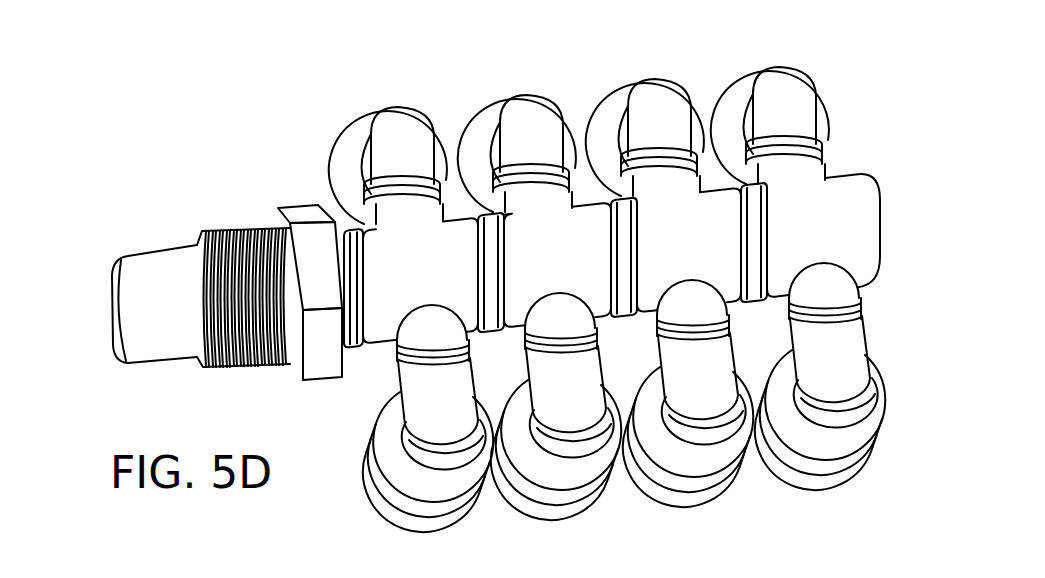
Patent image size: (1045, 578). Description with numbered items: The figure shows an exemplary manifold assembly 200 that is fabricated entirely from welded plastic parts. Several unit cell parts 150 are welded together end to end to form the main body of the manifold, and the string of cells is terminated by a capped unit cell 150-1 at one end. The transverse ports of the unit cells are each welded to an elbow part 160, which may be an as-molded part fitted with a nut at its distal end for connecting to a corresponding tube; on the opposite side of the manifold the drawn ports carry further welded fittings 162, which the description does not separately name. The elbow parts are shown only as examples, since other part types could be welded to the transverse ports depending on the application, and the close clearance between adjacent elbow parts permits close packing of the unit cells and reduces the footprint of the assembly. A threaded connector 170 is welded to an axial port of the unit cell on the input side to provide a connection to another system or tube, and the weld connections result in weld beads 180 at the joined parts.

The manifold assembly 200 is at (262, 136).
The unit cell part 150 is at (388, 252).
The capped unit cell 150-1 is at (827, 215).
The elbow part 160 is at (399, 137).
The flanged elbow fitting 162 is at (377, 490).
The threaded connector 170 is at (268, 378).
The weld bead 180 is at (366, 346).